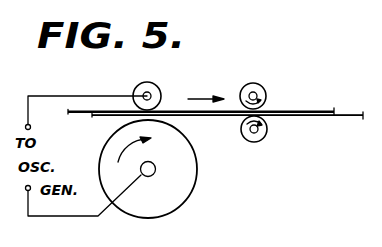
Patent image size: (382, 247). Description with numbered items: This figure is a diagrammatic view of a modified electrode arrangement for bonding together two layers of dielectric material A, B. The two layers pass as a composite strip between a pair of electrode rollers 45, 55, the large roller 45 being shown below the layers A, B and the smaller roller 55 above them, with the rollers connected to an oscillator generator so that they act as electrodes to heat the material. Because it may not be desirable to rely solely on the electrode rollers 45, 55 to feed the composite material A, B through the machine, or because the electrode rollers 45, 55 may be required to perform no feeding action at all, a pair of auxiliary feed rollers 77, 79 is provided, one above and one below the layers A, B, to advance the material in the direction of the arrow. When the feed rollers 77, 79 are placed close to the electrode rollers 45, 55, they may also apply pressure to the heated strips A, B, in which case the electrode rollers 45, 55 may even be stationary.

The electrode roller 55 is at (157, 86).
The auxiliary feed roller 77 is at (257, 84).
The auxiliary feed roller 79 is at (262, 140).
The electrode roller 45 is at (197, 176).
The layer of dielectric material A is at (296, 109).
The layer of dielectric material B is at (319, 116).